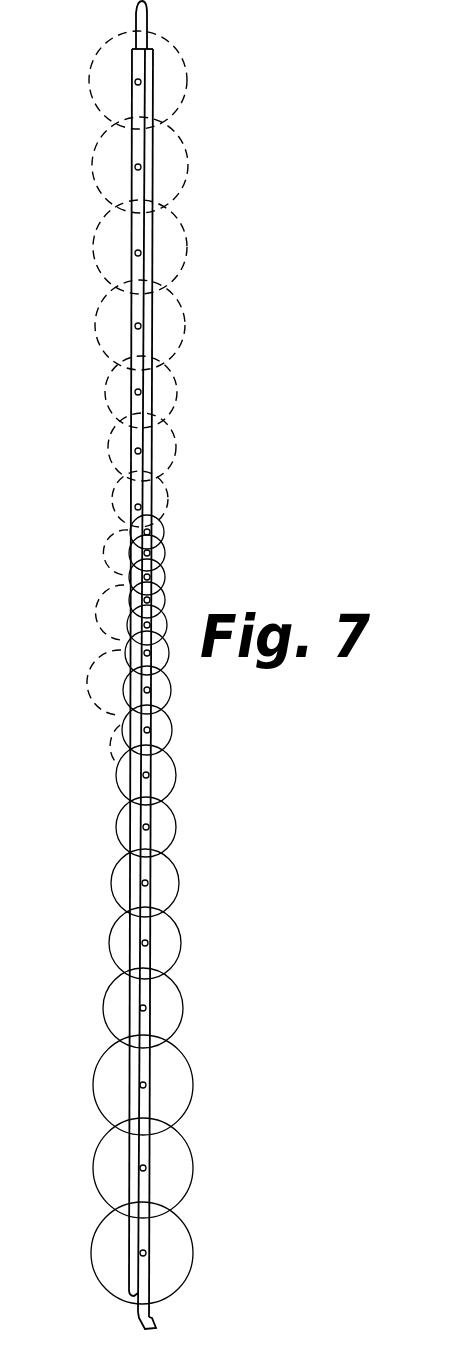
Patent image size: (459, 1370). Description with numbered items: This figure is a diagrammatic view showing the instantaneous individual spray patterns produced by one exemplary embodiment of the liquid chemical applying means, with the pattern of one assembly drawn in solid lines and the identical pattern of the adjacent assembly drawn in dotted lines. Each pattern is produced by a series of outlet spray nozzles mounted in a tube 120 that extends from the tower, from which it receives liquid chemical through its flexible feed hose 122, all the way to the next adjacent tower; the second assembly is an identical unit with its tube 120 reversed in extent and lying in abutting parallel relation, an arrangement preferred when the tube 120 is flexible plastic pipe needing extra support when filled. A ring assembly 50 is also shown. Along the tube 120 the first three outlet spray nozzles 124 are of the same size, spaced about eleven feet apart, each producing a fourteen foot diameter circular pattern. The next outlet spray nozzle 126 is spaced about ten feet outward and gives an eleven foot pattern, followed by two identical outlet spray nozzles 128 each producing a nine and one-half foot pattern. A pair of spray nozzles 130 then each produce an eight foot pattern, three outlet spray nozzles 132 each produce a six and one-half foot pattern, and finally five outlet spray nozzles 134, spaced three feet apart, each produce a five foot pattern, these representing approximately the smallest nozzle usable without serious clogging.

The ring assembly 50 is at (153, 109).
The tube 120 is at (150, 857).
The flexible feed hose 122 is at (136, 14).
The outlet spray nozzles 124 is at (150, 1085).
The outlet spray nozzle 126 is at (150, 1008).
The outlet spray nozzle 128 is at (150, 885).
The spray nozzles 130 is at (150, 775).
The outlet spray nozzles 132 is at (157, 665).
The outlet spray nozzles 134 is at (130, 557).